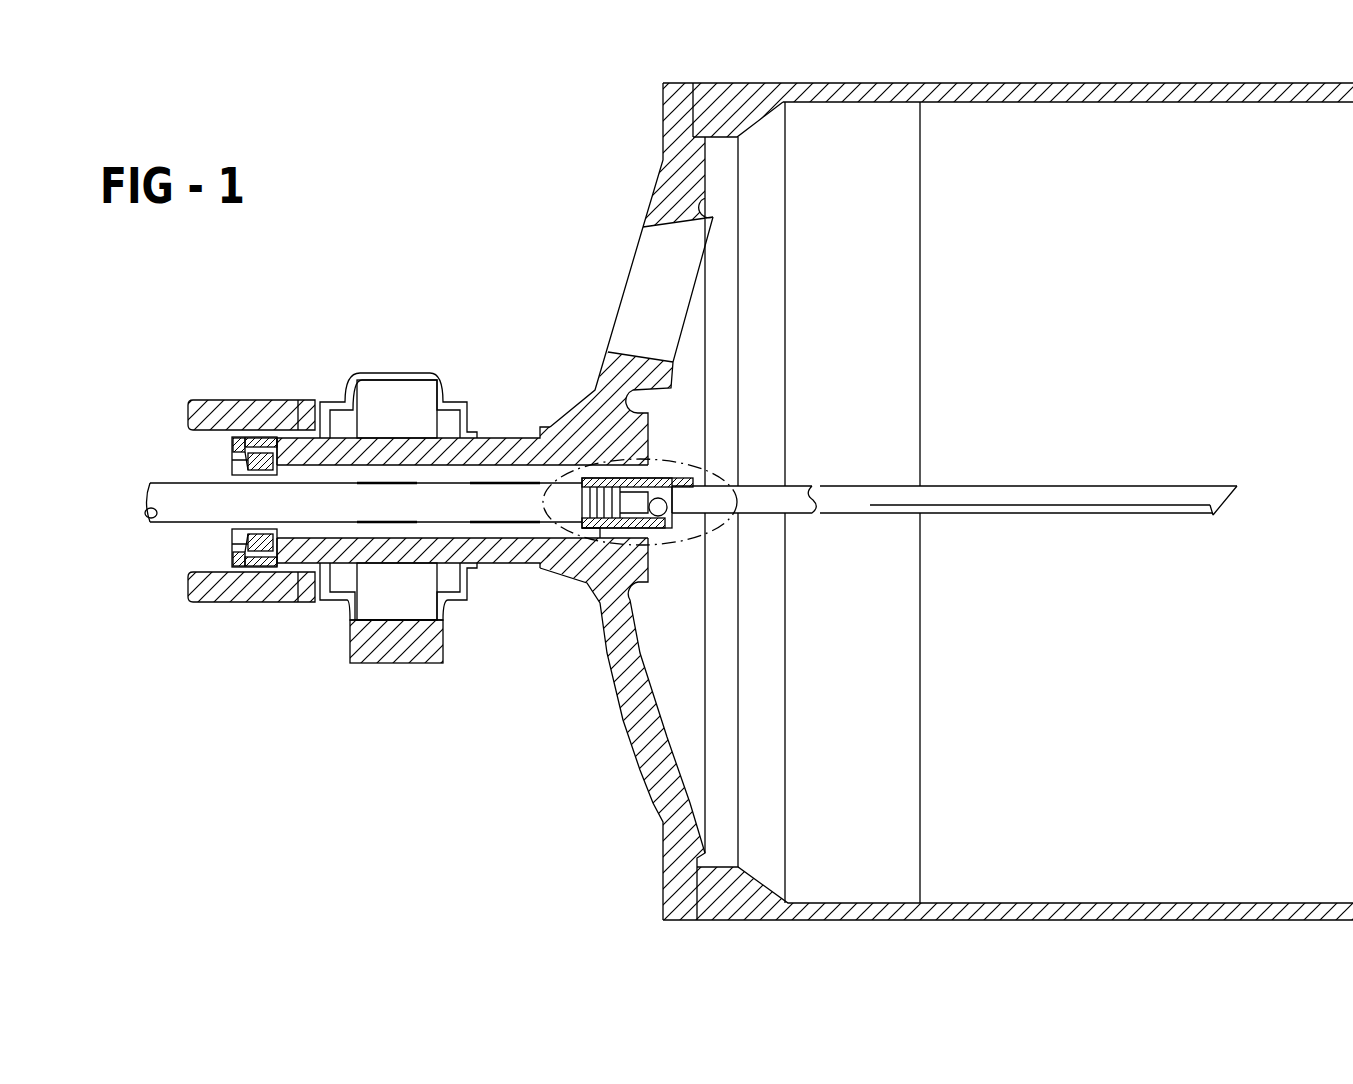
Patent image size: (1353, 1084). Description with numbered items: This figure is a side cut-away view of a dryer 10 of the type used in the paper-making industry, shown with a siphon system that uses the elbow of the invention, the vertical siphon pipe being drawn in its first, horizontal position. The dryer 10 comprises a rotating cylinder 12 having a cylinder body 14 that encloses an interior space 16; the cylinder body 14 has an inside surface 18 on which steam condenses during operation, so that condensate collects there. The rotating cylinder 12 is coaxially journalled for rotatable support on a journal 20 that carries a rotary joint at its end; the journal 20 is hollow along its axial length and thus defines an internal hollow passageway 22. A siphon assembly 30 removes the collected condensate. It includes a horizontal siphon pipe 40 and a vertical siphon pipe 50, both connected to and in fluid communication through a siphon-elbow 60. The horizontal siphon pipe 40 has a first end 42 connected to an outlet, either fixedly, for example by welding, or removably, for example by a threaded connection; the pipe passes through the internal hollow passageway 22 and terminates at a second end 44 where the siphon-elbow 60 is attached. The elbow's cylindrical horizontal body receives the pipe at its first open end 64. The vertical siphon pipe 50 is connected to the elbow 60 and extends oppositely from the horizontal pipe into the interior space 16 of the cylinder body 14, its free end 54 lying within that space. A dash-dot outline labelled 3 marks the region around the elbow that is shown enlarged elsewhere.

The dryer 10 is at (505, 187).
The rotating cylinder 12 is at (648, 200).
The cylinder body 14 is at (717, 105).
The interior space 16 is at (1234, 148).
The inside surface 18 is at (1146, 895).
The section detail region 3 is at (548, 470).
The journal 20 is at (500, 553).
The internal hollow passageway 22 is at (262, 478).
The siphon assembly 30 is at (473, 503).
The horizontal siphon pipe 40 is at (180, 522).
The first end 42 is at (101, 500).
The second end 44 is at (602, 476).
The vertical siphon pipe 50 is at (1042, 498).
The valve shaft end 54 is at (1238, 482).
The siphon-elbow 60 is at (610, 532).
The first open end 64 is at (598, 542).